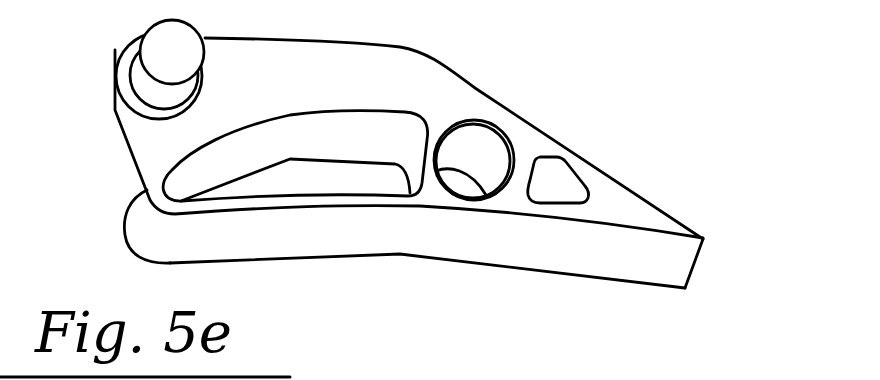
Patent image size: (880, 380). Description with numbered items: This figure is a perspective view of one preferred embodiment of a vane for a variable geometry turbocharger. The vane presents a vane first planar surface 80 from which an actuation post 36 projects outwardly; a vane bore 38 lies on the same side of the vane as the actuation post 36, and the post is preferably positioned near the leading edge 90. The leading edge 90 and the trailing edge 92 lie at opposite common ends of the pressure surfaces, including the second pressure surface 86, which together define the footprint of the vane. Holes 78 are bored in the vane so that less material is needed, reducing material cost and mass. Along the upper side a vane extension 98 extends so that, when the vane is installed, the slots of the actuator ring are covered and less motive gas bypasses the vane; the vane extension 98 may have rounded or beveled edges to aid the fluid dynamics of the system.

The actuation post 36 is at (137, 77).
The vane bore 38 is at (463, 185).
The holes 78 is at (392, 130).
The vane first planar surface 80 is at (533, 145).
The second pressure surface 86 is at (367, 245).
The leading edge 90 is at (133, 200).
The trailing edge 92 is at (695, 267).
The vane extension 98 is at (352, 53).